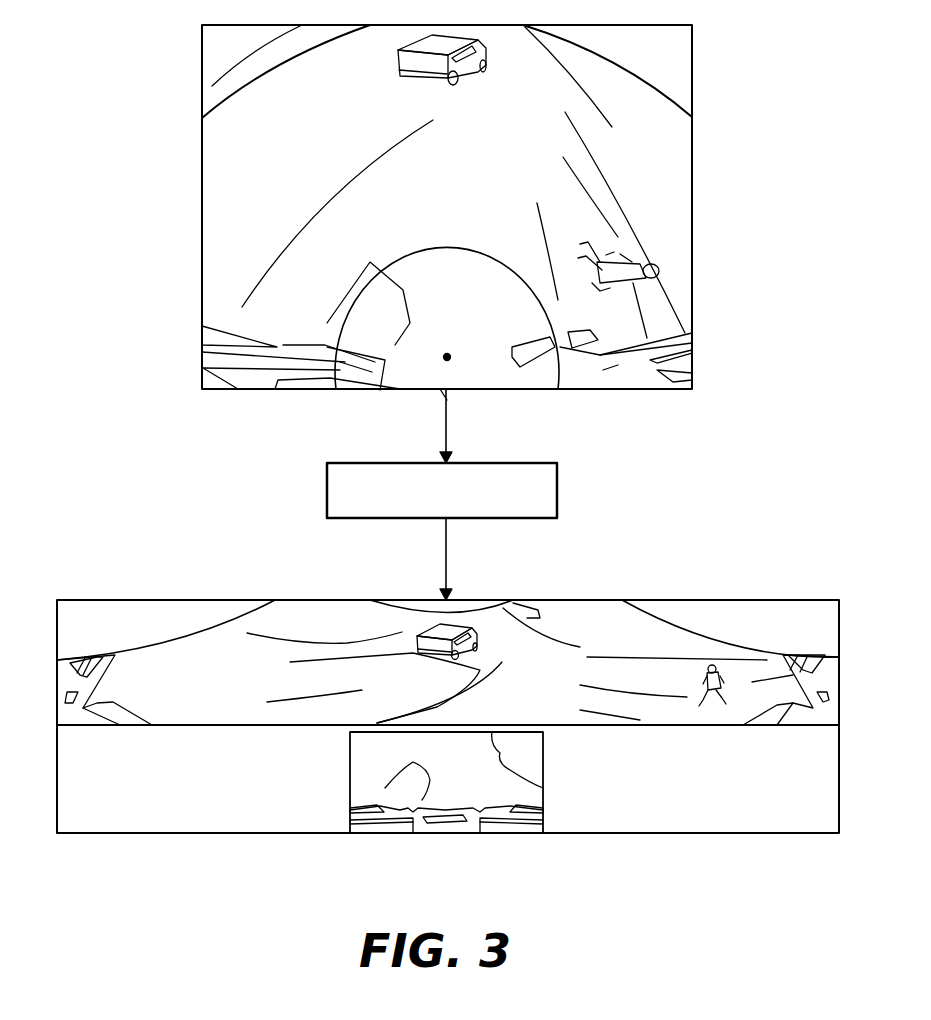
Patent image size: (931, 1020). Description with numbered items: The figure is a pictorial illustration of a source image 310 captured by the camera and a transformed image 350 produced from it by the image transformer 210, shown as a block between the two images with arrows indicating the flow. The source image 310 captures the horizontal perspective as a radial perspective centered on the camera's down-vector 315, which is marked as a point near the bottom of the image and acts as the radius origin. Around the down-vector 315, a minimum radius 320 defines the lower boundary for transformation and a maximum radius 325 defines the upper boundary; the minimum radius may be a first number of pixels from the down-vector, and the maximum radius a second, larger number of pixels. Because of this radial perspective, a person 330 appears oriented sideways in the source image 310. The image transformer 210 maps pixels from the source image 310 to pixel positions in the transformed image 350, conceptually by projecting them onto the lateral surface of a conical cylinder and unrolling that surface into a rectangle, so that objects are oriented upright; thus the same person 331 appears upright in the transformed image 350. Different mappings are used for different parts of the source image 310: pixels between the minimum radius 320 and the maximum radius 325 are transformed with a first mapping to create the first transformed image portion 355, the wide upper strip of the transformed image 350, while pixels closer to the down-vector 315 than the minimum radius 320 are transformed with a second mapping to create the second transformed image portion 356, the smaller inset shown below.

The source image 310 is at (458, 226).
The down-vector 315 is at (445, 360).
The minimum radius 320 is at (565, 360).
The maximum radius 325 is at (692, 86).
The person 330 is at (658, 278).
The image transformer 210 is at (557, 477).
The transformed image 350 is at (428, 690).
The first transformed image portion 355 is at (57, 678).
The person 331 is at (711, 665).
The second transformed image portion 356 is at (544, 770).